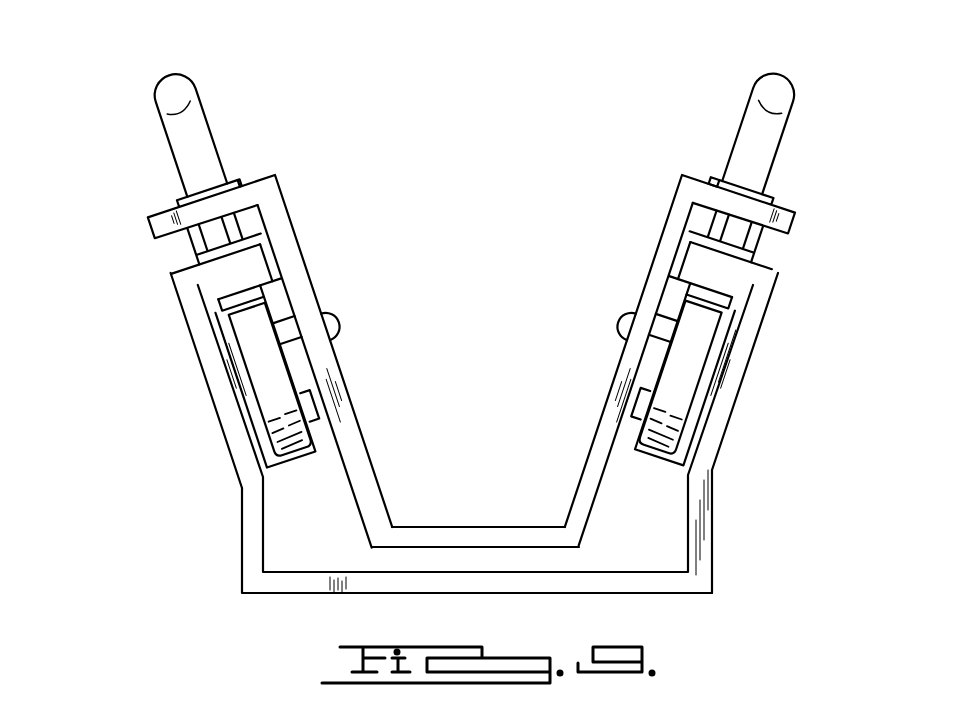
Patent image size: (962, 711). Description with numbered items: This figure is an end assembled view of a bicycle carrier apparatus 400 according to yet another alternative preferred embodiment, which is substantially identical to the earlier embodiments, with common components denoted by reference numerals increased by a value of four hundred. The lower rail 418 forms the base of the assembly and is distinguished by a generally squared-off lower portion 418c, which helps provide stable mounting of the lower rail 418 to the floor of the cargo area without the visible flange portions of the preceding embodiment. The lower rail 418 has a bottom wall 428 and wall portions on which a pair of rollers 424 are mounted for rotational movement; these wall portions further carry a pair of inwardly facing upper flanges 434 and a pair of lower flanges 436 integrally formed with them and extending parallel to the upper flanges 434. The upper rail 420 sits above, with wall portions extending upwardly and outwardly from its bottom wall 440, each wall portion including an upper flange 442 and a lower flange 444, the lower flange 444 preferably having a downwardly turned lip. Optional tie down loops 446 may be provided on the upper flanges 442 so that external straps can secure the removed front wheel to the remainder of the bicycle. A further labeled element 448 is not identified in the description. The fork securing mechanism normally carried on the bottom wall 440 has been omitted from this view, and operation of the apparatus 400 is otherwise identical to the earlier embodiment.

The apparatus 400 is at (478, 202).
The lower rail 418 is at (724, 449).
The lower portion 418c is at (252, 544).
The upper rail 420 is at (323, 277).
The rollers 424 is at (255, 443).
The bottom wall 428 is at (650, 587).
The upper flanges 434 is at (218, 268).
The lower flanges 436 is at (258, 423).
The bottom wall 440 is at (462, 526).
The upper flange 442 is at (160, 223).
The lower flange 444 is at (232, 328).
The tie down loops 446 is at (179, 98).
The cross bar 448 is at (242, 306).